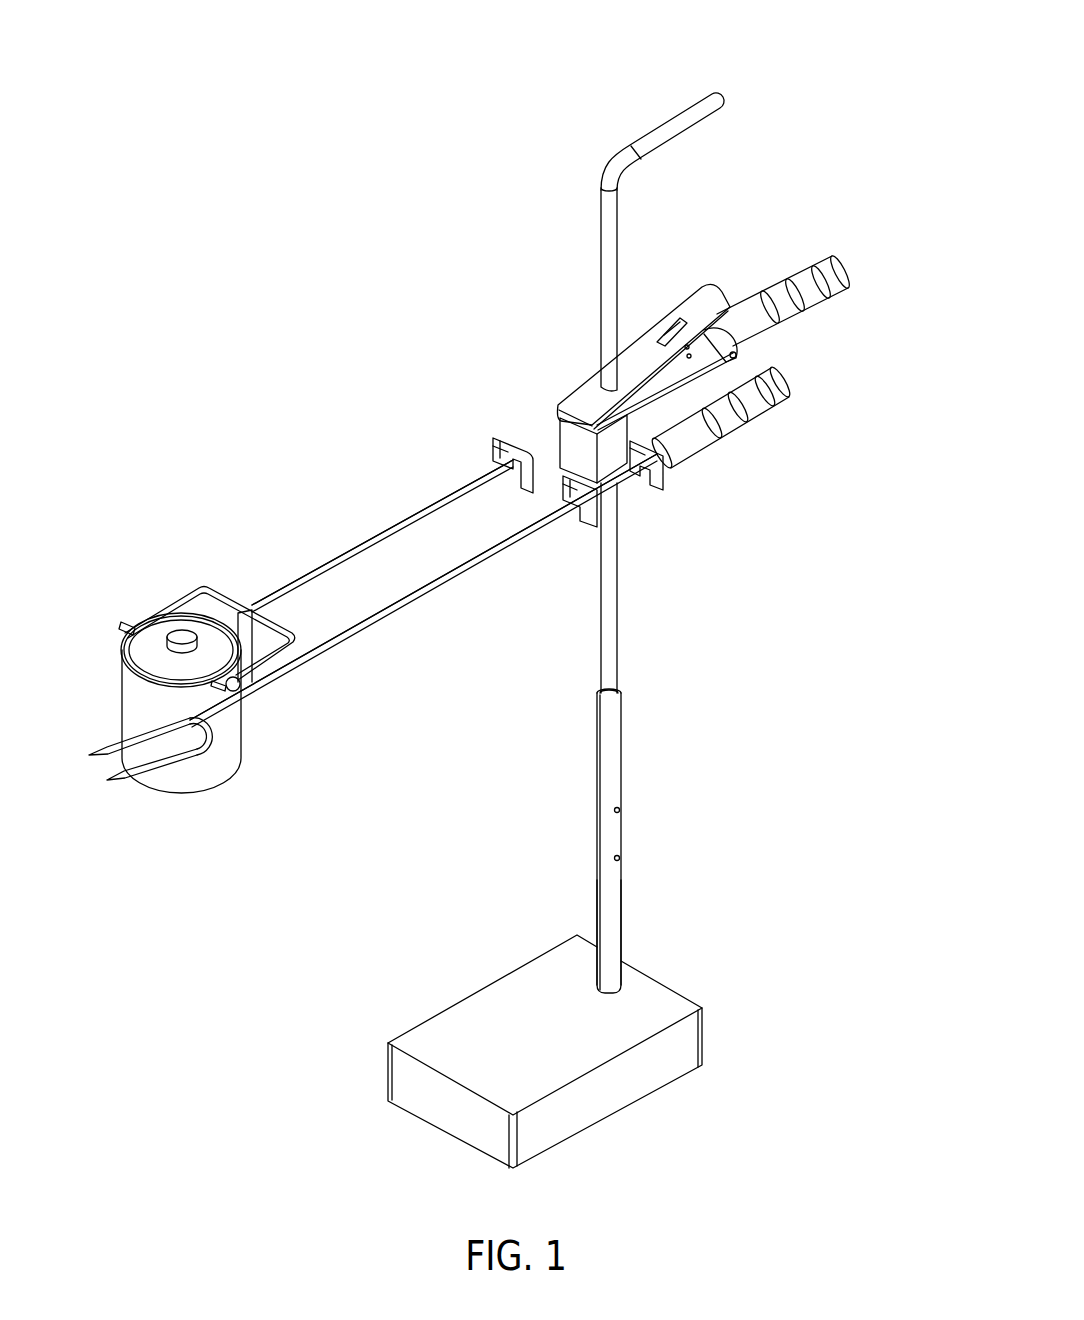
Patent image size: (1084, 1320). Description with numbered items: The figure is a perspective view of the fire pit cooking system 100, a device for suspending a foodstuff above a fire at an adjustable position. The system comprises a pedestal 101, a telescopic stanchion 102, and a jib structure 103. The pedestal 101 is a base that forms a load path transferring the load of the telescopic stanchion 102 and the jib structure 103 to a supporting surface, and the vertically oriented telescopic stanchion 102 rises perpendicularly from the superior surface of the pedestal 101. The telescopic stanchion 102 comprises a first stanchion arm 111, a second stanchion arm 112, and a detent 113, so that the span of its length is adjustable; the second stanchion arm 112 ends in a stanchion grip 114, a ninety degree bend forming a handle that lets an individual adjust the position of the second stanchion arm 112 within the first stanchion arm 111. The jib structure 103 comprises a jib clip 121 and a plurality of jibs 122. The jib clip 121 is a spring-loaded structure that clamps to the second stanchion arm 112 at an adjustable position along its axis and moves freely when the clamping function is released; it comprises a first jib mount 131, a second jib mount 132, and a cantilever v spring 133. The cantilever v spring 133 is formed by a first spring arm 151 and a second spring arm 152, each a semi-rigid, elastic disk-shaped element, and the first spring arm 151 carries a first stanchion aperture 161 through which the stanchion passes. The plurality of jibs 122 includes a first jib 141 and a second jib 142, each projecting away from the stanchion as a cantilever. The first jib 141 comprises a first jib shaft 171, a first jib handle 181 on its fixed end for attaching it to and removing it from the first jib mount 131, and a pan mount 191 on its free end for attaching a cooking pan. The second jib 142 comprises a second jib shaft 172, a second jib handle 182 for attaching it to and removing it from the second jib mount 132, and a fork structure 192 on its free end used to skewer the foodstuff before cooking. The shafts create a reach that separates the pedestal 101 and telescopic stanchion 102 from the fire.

The fire pit cooking system 100 is at (118, 205).
The pedestal 101 is at (703, 1037).
The telescopic stanchion 102 is at (633, 725).
The jib structure 103 is at (301, 463).
The first stanchion arm 111 is at (624, 908).
The second stanchion arm 112 is at (620, 622).
The detent 113 is at (620, 858).
The stanchion grip 114 is at (650, 128).
The jib clip 121 is at (578, 326).
The plurality of jibs 122 is at (736, 362).
The first jib mount 131 is at (511, 540).
The second jib mount 132 is at (580, 536).
The cantilever v spring 133 is at (718, 286).
The first jib 141 is at (267, 594).
The second jib 142 is at (336, 648).
The first spring arm 151 is at (693, 290).
The second spring arm 152 is at (736, 358).
The first stanchion aperture 161 is at (575, 388).
The first jib shaft 171 is at (289, 582).
The second jib shaft 172 is at (286, 680).
The first jib handle 181 is at (830, 270).
The second jib handle 182 is at (790, 402).
The pan mount 191 is at (166, 613).
The fork structure 192 is at (107, 773).